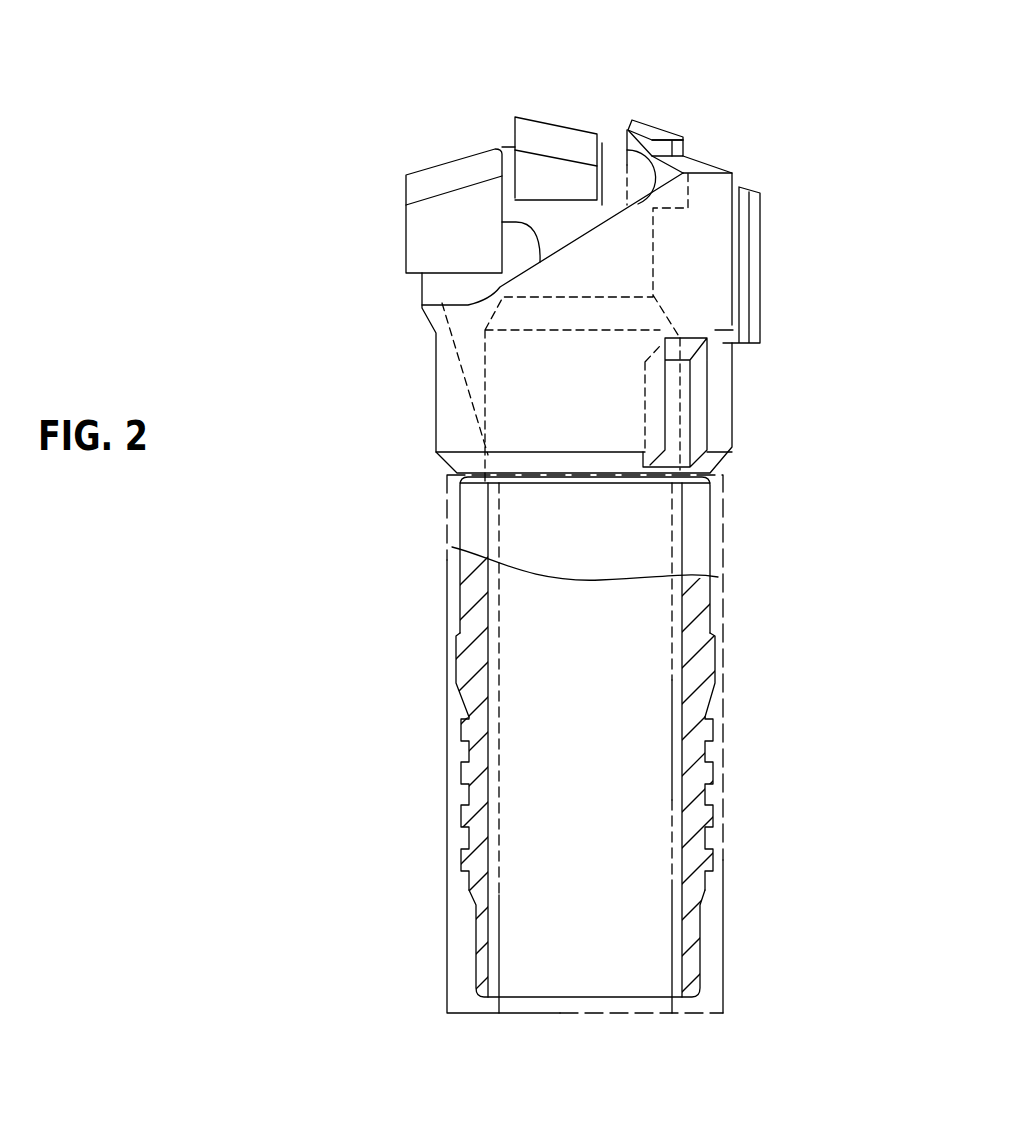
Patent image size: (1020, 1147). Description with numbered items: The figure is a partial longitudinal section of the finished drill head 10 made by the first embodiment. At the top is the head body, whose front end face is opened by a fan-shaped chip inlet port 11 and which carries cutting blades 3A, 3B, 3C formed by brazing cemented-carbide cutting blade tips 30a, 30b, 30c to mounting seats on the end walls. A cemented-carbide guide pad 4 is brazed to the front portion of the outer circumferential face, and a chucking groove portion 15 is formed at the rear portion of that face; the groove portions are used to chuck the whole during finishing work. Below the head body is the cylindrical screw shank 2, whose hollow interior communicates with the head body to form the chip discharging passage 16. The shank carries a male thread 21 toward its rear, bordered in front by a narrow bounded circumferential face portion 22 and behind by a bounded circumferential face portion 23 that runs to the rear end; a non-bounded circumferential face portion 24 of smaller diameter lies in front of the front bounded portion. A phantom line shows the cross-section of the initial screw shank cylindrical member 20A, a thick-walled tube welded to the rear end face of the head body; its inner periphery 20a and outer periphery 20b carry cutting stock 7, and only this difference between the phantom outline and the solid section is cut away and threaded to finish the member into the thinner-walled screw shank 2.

The screw shank 2 is at (716, 520).
The cutting blade 3A is at (548, 117).
The cutting blade 3B is at (660, 123).
The cutting blade 3C is at (443, 165).
The guide pad 4 is at (762, 265).
The cutting stock 7 is at (500, 650).
The drill head 10 is at (440, 548).
The chip inlet port 11 is at (502, 222).
The chucking groove portion 15 is at (675, 421).
The chip discharging passage 16 is at (492, 900).
The screw shank cylindrical member 20A is at (735, 918).
The inner periphery 20a is at (670, 740).
The outer periphery 20b is at (447, 742).
The male thread 21 is at (704, 757).
The bounded circumferential face portion 22 is at (717, 661).
The bounded circumferential face portion 23 is at (476, 943).
The non-bounded circumferential face portion 24 is at (458, 588).
The cutting blade tip 30a is at (550, 178).
The cutting blade tip 30b is at (697, 147).
The cutting blade tip 30c is at (430, 219).